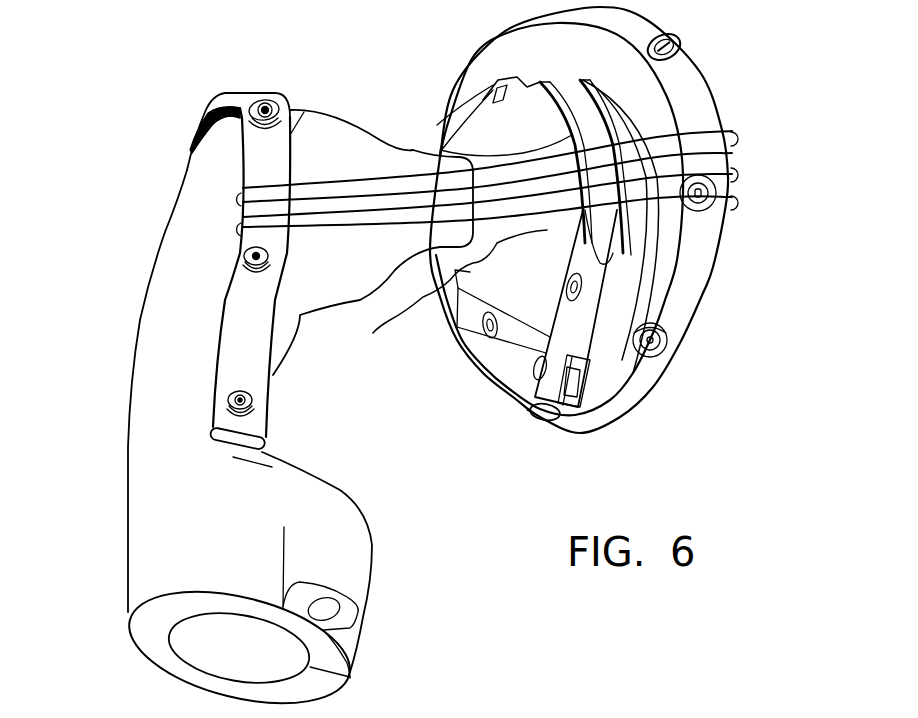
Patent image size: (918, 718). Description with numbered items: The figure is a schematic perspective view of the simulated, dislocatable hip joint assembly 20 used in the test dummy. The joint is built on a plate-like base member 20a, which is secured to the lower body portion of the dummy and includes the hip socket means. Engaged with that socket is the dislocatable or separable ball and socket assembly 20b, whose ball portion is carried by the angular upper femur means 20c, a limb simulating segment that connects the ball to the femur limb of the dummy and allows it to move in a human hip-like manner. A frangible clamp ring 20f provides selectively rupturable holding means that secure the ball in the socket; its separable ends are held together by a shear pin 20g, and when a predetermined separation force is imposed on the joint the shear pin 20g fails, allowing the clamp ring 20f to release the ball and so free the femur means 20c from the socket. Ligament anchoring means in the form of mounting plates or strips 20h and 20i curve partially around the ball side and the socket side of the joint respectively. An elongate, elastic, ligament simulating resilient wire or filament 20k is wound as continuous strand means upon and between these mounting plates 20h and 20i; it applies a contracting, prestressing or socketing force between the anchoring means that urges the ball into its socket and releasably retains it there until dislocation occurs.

The dislocatable hip joint assembly 20 is at (748, 258).
The base member 20a is at (698, 113).
The ball and socket assembly 20b is at (413, 150).
The upper femur means 20c is at (137, 427).
The frangible clamp ring 20f is at (513, 347).
The shear pin 20g is at (513, 400).
The mounting plate 20h is at (289, 152).
The mounting plate 20i is at (713, 160).
The resilient wire or filament 20k is at (343, 178).